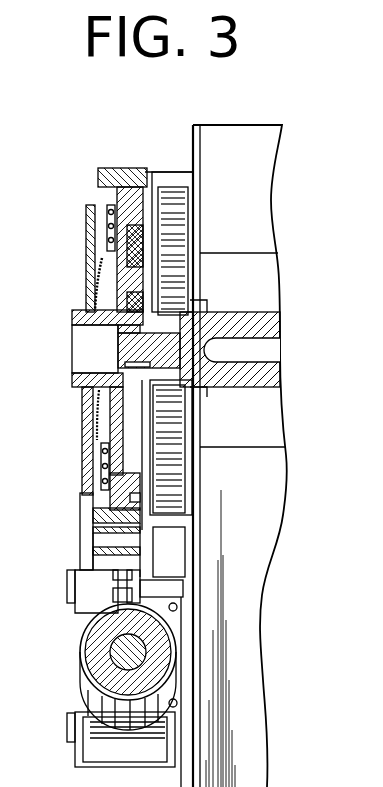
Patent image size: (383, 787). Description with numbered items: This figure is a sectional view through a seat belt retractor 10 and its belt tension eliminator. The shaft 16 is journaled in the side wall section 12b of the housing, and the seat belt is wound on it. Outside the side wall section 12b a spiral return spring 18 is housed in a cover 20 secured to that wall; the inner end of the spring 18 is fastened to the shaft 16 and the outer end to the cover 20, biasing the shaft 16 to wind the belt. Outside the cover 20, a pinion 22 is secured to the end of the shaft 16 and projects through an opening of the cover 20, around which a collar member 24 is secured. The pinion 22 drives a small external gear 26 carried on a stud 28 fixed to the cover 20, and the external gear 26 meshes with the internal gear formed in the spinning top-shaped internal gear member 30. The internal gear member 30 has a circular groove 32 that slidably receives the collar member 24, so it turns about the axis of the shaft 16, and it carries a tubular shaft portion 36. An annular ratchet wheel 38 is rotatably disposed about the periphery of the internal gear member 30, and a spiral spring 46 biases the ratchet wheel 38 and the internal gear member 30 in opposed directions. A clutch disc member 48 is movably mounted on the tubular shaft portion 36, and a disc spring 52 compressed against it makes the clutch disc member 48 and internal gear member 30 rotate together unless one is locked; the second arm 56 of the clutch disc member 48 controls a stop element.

The seat belt retractor 10 is at (296, 127).
The side wall section 12b is at (200, 125).
The shaft 16 is at (258, 375).
The spiral return spring 18 is at (170, 281).
The cover 20 is at (170, 182).
The pinion 22 is at (118, 348).
The collar member 24 is at (133, 498).
The external gear 26 is at (137, 245).
The stud 28 is at (132, 277).
The internal gear member 30 is at (117, 200).
The circular groove 32 is at (135, 215).
The tubular shaft portion 36 is at (75, 378).
The annular ratchet wheel 38 is at (112, 168).
The spiral spring 46 is at (100, 470).
The clutch disc member 48 is at (88, 240).
The disc spring 52 is at (85, 428).
The second arm 56 is at (85, 515).